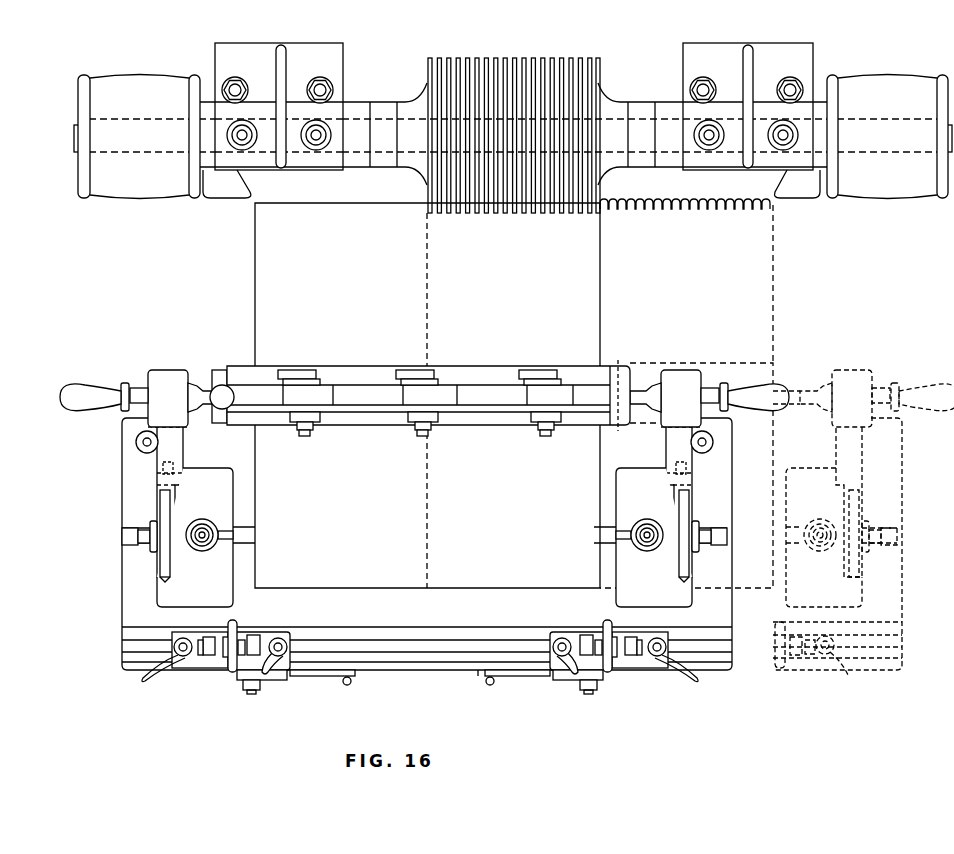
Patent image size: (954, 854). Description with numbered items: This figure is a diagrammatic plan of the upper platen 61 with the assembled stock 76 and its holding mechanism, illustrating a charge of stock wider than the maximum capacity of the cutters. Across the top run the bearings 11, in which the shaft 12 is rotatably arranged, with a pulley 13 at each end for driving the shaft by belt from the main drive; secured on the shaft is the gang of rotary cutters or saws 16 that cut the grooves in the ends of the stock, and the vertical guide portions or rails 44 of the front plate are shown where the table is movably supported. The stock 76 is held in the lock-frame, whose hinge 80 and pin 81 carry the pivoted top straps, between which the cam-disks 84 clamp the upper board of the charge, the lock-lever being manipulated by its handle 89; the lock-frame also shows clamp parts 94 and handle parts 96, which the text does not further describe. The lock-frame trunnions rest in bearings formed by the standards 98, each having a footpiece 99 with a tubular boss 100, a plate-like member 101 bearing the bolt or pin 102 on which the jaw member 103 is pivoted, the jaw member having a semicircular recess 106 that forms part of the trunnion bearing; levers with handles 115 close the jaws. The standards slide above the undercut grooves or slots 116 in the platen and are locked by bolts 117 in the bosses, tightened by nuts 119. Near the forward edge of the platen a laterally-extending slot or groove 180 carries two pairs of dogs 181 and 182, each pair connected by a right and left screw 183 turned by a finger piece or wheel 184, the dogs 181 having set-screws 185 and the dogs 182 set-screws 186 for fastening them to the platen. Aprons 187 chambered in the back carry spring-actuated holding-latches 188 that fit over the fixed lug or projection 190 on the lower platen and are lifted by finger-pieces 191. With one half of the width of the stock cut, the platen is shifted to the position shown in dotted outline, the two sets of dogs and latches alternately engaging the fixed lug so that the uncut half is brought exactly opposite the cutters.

The bearings 11 is at (335, 62).
The shaft 12 is at (75, 145).
The pulley 13 is at (132, 192).
The rotary cutters or saws 16 is at (514, 60).
The vertical guide portions or rails 44 is at (218, 193).
The upper platen 61 is at (122, 614).
The stock 76 is at (514, 395).
The hinge 80 is at (626, 372).
The pin 81 is at (618, 366).
The cam-disks 84 is at (328, 393).
The handle 89 is at (223, 398).
The clamp 94 is at (305, 372).
The handle 96 is at (80, 405).
The standards 98 is at (424, 591).
The footpiece 99 is at (424, 537).
The tubular boss 100 is at (203, 550).
The disk or plate-like member 101 is at (160, 503).
The bolt or pin 102 is at (122, 541).
The jaw member 103 is at (163, 455).
The semicircular recess 106 is at (172, 377).
The handles 115 is at (135, 443).
The undercut grooves or slots 116 is at (122, 530).
The bolts 117 is at (198, 543).
The nuts 119 is at (202, 527).
The laterally-extending slot or groove 180 is at (135, 640).
The dogs 181 is at (283, 632).
The dogs 182 is at (668, 632).
The right and left screws 183 is at (200, 656).
The finger piece or wheel 184 is at (236, 627).
The set-screws 185 is at (292, 640).
The set-screws 186 is at (140, 678).
The aprons 187 is at (272, 683).
The holding-latches 188 is at (325, 676).
The lug or projection 190 is at (477, 678).
The finger-piece 191 is at (350, 684).